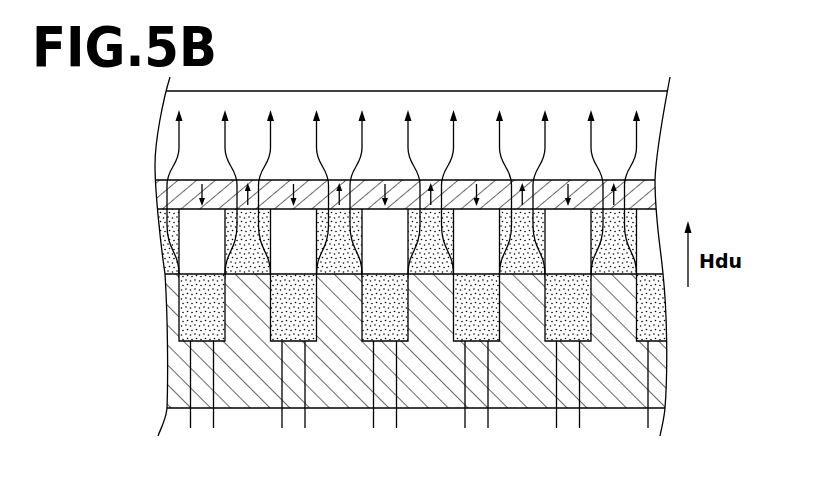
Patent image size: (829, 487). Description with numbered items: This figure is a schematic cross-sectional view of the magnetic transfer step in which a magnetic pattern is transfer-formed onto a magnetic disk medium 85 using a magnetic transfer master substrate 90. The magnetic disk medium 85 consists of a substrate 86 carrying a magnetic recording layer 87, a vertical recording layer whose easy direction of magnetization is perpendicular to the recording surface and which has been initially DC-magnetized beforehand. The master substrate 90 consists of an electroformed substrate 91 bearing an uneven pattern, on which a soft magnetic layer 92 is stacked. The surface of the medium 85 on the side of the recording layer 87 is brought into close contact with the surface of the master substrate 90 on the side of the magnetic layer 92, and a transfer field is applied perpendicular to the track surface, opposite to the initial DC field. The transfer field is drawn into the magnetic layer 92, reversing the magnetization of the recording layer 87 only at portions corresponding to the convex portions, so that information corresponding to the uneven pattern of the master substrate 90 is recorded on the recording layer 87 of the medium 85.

The magnetic disk medium 85 is at (98, 121).
The substrate 86 is at (172, 139).
The magnetic recording layer 87 is at (170, 192).
The magnetic transfer master substrate 90 is at (98, 252).
The substrate 91 is at (177, 358).
The magnetic layer 92 is at (166, 265).